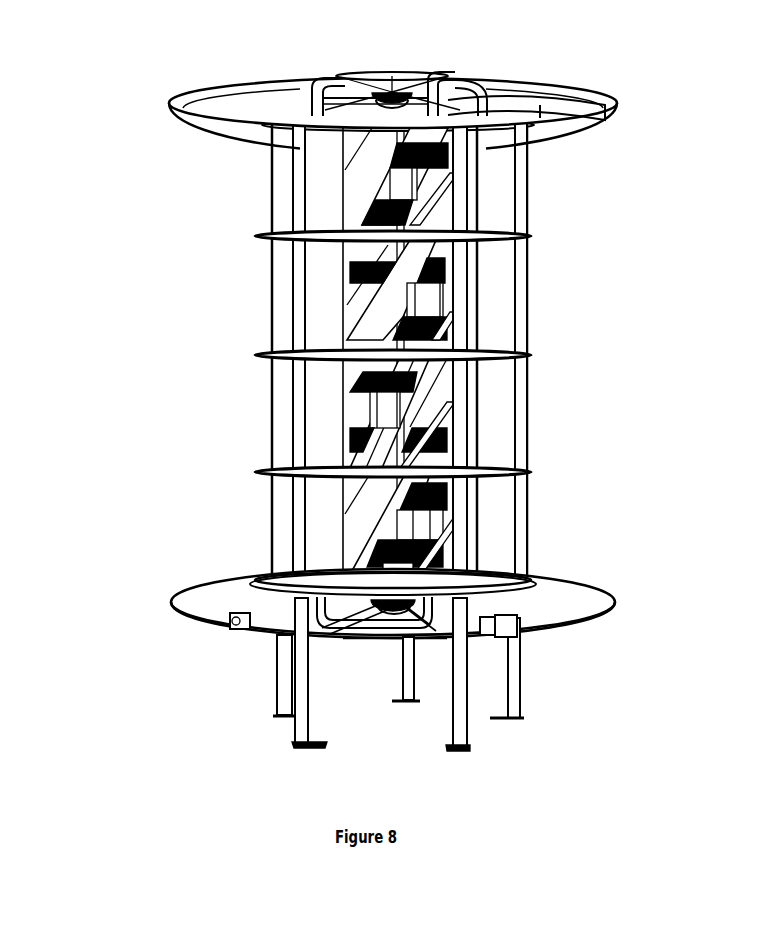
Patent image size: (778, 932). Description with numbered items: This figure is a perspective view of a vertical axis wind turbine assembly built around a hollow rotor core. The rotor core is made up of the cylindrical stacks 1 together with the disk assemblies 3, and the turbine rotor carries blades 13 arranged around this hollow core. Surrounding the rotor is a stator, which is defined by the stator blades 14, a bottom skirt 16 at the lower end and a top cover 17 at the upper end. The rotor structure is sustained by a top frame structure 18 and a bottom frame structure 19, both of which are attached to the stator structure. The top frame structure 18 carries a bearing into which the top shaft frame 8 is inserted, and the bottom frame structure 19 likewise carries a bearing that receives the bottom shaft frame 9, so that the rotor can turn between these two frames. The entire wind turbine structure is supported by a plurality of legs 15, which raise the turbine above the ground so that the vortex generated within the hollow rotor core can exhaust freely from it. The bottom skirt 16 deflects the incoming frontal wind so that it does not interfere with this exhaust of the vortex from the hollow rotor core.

The cylindrical stacks 1 is at (355, 405).
The disk assemblies 3 is at (437, 318).
The top shaft frame 8 is at (380, 75).
The bottom shaft frame 9 is at (413, 698).
The blades 13 is at (390, 297).
The stator blades 14 is at (462, 495).
The legs 15 is at (460, 702).
The bottom skirt 16 is at (215, 594).
The top cover 17 is at (230, 106).
The top frame structure 18 is at (425, 72).
The bottom frame structure 19 is at (340, 640).